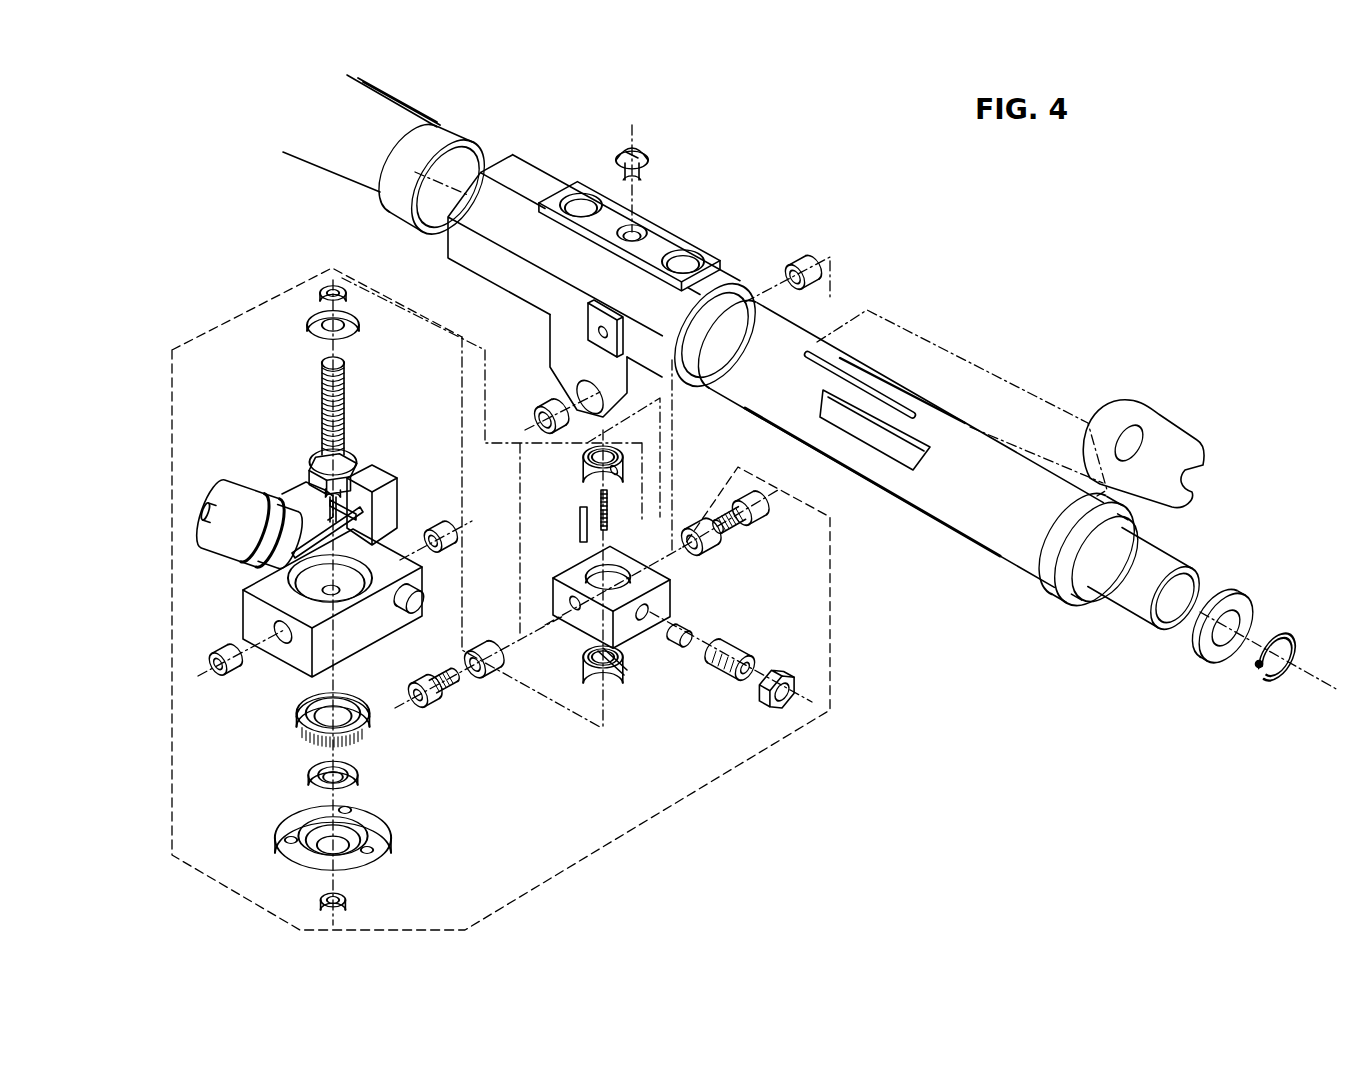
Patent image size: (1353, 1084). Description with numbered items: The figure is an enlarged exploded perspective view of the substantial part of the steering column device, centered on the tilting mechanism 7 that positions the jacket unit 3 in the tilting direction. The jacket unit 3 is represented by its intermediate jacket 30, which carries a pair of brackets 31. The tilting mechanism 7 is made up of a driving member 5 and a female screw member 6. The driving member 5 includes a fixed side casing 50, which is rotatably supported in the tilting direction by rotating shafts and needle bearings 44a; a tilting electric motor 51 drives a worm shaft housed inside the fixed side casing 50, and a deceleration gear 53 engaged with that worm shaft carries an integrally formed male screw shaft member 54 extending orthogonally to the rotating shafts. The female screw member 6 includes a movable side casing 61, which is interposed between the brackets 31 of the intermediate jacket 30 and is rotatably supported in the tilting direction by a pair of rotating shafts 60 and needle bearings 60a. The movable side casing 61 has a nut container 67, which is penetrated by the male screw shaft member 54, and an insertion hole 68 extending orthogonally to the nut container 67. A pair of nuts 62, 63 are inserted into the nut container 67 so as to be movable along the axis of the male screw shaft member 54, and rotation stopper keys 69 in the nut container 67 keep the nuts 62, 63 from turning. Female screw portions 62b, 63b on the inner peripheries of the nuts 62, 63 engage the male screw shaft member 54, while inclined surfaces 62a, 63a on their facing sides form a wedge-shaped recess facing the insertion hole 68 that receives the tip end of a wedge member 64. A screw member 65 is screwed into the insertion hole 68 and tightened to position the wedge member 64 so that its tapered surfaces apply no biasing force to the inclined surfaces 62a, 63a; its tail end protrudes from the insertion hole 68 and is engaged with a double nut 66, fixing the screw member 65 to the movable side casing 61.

The jacket unit 3 is at (699, 195).
The driving member 5 is at (393, 743).
The female screw member 6 is at (679, 662).
The tilting mechanism 7 is at (735, 800).
The intermediate jacket 30 is at (533, 175).
The bracket 31 is at (563, 370).
The needle bearing 44a is at (207, 653).
The fixed side casing 50 is at (253, 608).
The tilting electric motor 51 is at (217, 520).
The deceleration gear 53 is at (315, 472).
The male screw shaft member 54 is at (323, 395).
The rotating shaft 60 is at (765, 522).
The needle bearing 60a is at (710, 547).
The movable side casing 61 is at (663, 590).
The nut 62 is at (600, 683).
The inclined surface 62a is at (630, 672).
The female screw portion 62b is at (597, 655).
The nut 63 is at (637, 437).
The inclined surface 63a is at (618, 480).
The female screw portion 63b is at (630, 440).
The wedge member 64 is at (695, 630).
The screw member 65 is at (722, 680).
The double nut 66 is at (778, 710).
The nut container 67 is at (595, 566).
The insertion hole 68 is at (650, 610).
The rotation stopper key 69 is at (590, 492).